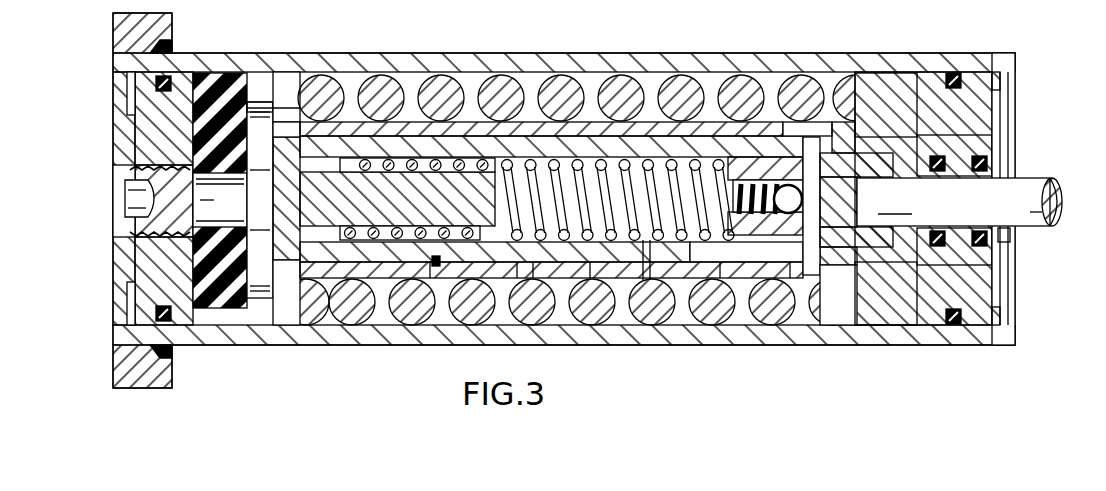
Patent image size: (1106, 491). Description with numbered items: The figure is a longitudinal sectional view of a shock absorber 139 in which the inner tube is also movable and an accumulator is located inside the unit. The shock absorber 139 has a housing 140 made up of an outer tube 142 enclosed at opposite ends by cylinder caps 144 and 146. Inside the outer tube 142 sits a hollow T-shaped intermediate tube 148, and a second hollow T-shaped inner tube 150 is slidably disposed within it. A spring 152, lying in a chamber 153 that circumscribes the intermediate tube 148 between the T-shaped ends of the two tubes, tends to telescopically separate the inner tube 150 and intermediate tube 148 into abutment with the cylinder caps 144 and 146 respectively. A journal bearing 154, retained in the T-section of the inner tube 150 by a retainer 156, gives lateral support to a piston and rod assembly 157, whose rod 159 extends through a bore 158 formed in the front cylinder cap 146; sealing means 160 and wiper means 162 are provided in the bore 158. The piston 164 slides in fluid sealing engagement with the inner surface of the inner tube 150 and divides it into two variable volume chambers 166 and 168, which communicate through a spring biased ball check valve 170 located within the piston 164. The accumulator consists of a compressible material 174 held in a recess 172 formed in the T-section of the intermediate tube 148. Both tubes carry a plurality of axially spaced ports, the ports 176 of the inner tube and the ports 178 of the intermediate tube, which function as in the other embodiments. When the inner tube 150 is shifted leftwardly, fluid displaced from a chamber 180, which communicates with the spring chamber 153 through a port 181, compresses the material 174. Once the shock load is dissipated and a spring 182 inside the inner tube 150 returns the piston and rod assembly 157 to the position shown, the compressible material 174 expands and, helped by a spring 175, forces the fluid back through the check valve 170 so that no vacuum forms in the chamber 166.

The shock absorber 139 is at (664, 44).
The housing 140 is at (1063, 76).
The outer tube 142 is at (408, 54).
The cylinder cap 144 is at (113, 133).
The cylinder cap 146 is at (1004, 108).
The intermediate tube 148 is at (276, 62).
The inner tube 150 is at (876, 72).
The spring 152 is at (500, 56).
The chamber 153 is at (563, 322).
The journal bearing 154 is at (862, 146).
The retainer 156 is at (928, 134).
The piston and rod assembly 157 is at (1062, 160).
The bore 158 is at (1010, 234).
The rod 159 is at (1008, 206).
The sealing means 160 is at (958, 220).
The wiper means 162 is at (978, 212).
The piston 164 is at (742, 178).
The variable volume chamber 166 is at (638, 150).
The variable volume chamber 168 is at (814, 260).
The spring biased ball check valve 170 is at (848, 198).
The recess 172 is at (246, 98).
The compressible material 174 is at (250, 165).
The spring 175 is at (646, 322).
The ports 176 is at (518, 248).
The ports 178 is at (506, 266).
The chamber 180 is at (285, 215).
The port 181 is at (312, 112).
The spring 182 is at (520, 199).